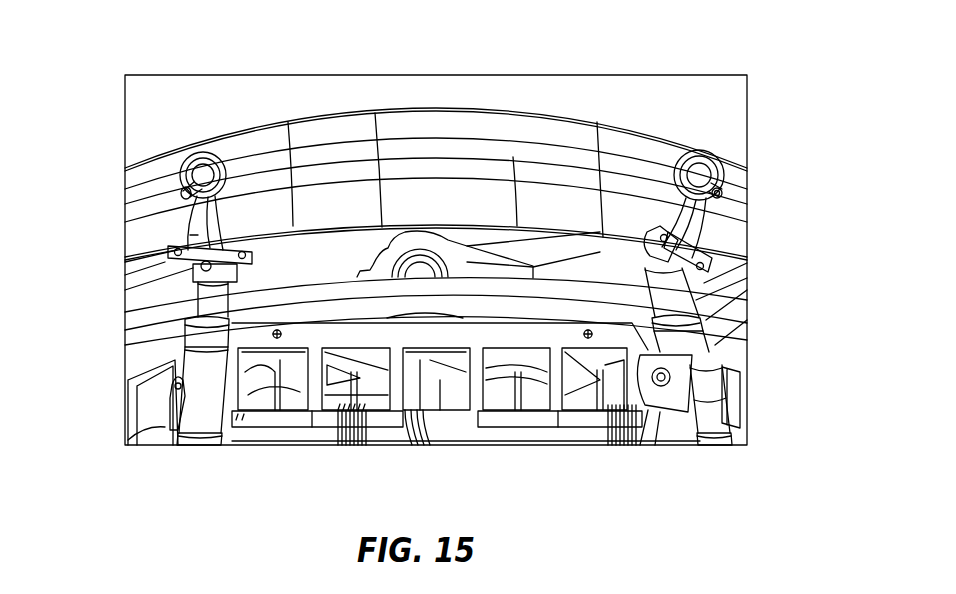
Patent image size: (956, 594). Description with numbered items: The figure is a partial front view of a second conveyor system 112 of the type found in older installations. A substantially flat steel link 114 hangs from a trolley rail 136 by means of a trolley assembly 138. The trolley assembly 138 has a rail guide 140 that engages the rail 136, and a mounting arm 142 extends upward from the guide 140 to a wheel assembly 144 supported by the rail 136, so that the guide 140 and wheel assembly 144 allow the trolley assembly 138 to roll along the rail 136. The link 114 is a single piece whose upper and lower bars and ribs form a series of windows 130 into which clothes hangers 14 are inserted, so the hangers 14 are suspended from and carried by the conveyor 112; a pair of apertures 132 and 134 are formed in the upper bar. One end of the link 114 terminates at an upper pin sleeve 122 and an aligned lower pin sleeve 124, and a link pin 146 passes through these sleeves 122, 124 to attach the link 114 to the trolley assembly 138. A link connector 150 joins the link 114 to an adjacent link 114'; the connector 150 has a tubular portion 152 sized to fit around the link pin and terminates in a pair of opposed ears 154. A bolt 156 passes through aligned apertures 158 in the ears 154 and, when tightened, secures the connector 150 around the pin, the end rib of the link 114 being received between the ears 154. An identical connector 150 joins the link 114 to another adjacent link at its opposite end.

The second conveyor system 112 is at (426, 59).
The aperture 132 is at (277, 330).
The aperture 134 is at (588, 330).
The trolley rail 136 is at (494, 127).
The wheel assembly 144 is at (202, 146).
The mounting arm 142 is at (194, 212).
The rail guide 140 is at (174, 251).
The trolley assembly 138 is at (152, 289).
The link pin 146 is at (204, 329).
The upper pin sleeve 122 is at (158, 360).
The adjacent link 114' is at (116, 402).
The link 114 is at (314, 448).
The link connector 150 is at (182, 426).
The lower pin sleeve 124 is at (188, 430).
The windows 130 is at (500, 430).
The clothes hangers 14 is at (607, 430).
The apertures 158 is at (667, 430).
The tubular portion 152 is at (720, 398).
The bolt 156 is at (672, 366).
The opposed ears 154 is at (662, 282).